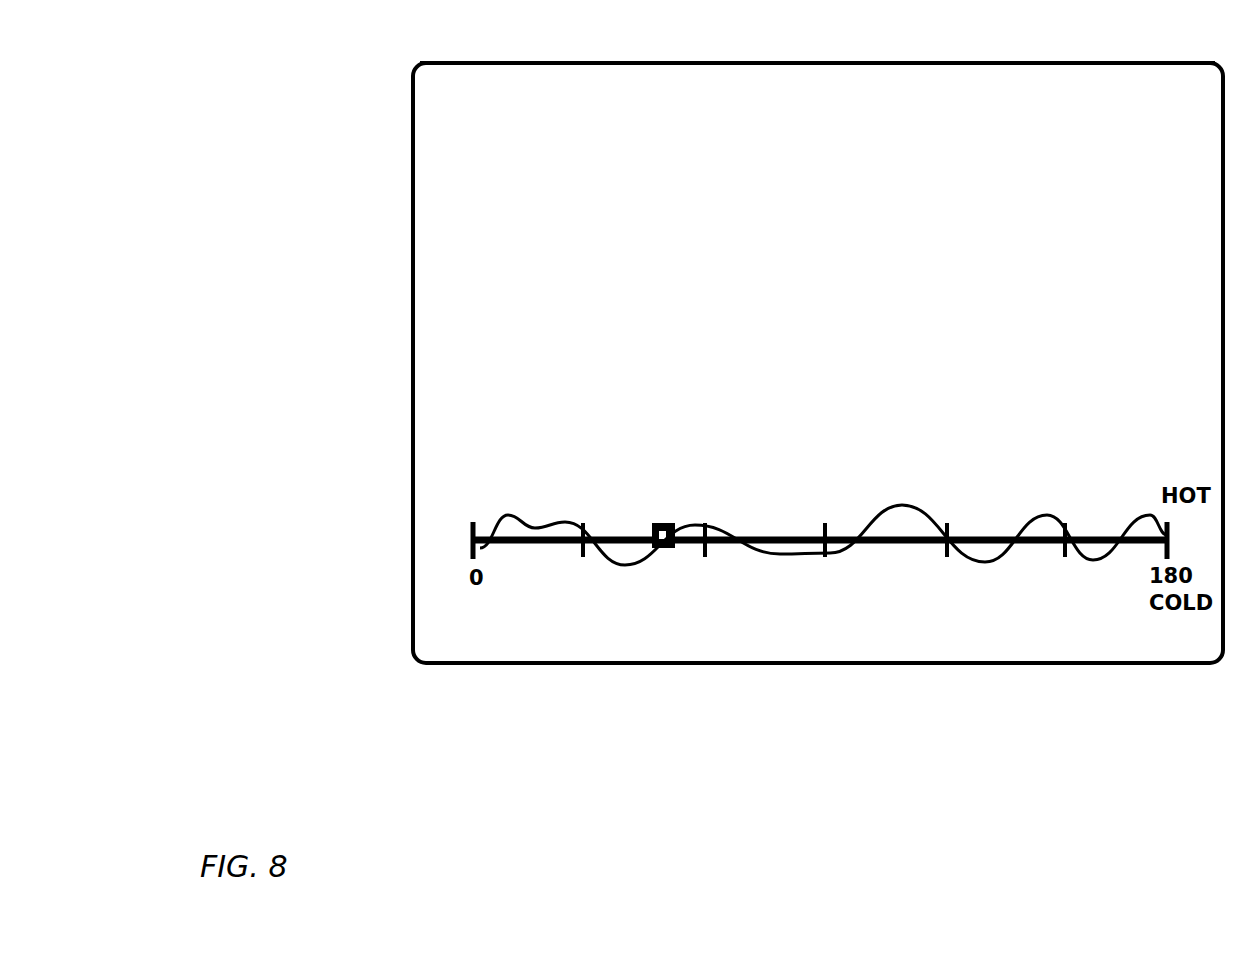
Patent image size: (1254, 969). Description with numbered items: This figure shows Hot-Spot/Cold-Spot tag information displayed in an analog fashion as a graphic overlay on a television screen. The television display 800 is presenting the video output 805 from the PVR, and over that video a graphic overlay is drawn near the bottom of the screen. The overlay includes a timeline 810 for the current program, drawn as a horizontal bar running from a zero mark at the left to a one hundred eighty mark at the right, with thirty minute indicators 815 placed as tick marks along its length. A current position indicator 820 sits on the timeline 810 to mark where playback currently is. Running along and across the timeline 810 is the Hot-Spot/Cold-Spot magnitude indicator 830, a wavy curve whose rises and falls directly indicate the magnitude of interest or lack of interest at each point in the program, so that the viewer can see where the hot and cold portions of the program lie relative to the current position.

The television display 800 is at (548, 63).
The video output 805 is at (657, 91).
The timeline 810 is at (549, 548).
The thirty minute indicators 815 is at (947, 557).
The current position indicator 820 is at (667, 560).
The Hot-Spot/Cold-Spot magnitude indicator 830 is at (785, 555).